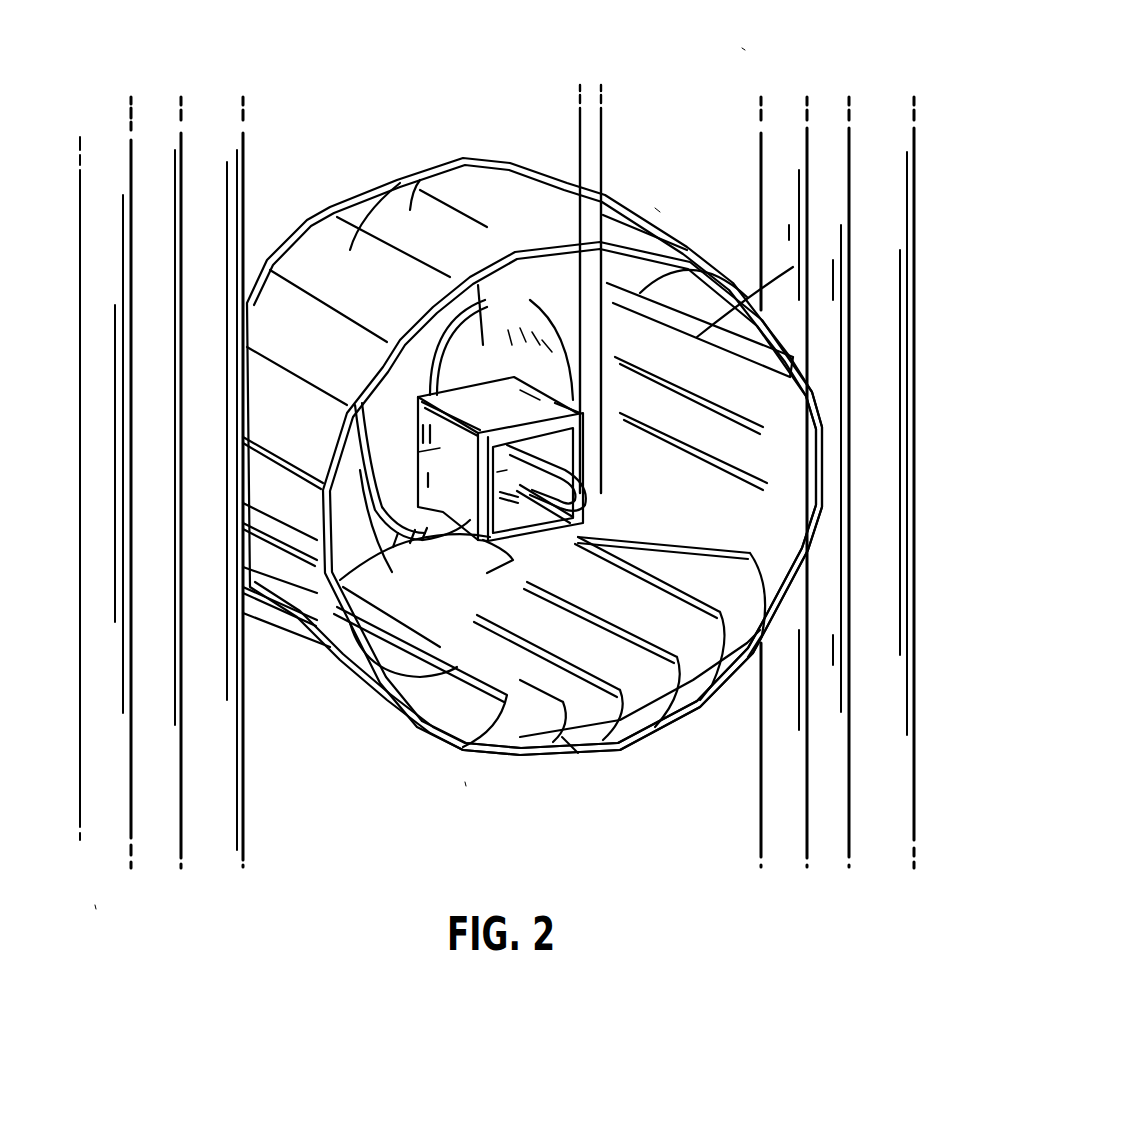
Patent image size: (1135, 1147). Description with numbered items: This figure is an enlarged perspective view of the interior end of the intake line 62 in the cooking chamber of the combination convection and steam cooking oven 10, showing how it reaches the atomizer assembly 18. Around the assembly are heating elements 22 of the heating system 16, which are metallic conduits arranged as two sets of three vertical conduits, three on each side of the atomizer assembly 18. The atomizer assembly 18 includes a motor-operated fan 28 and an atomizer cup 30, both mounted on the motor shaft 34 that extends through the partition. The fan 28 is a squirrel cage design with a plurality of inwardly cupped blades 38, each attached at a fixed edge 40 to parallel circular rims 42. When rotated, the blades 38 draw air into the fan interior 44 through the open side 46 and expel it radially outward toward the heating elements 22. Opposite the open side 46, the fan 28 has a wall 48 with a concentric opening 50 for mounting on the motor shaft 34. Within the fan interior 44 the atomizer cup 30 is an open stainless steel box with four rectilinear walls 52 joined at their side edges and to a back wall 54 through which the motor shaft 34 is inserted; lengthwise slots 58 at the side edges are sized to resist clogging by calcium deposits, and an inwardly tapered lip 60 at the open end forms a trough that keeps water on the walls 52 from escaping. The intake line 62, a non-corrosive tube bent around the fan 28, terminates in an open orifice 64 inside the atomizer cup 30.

The combination convection and steam cooking oven 10 is at (742, 48).
The heating system 16 is at (95, 905).
The atomizer assembly 18 is at (657, 208).
The heating elements 22 is at (122, 786).
The fan 28 is at (429, 738).
The atomizer cup 30 is at (467, 543).
The motor shaft 34 is at (440, 448).
The blades 38 is at (468, 197).
The fixed edge 40 is at (545, 750).
The circular rims 42 is at (310, 217).
The fan interior 44 is at (533, 443).
The open side 46 is at (465, 782).
The wall 48 is at (563, 385).
The concentric opening 50 is at (520, 328).
The rectilinear walls 52 is at (509, 419).
The back wall 54 is at (520, 390).
The lengthwise slots 58 is at (427, 400).
The inwardly tapered lip 60 is at (610, 480).
The intake line 62 is at (602, 140).
The open orifice 64 is at (500, 478).